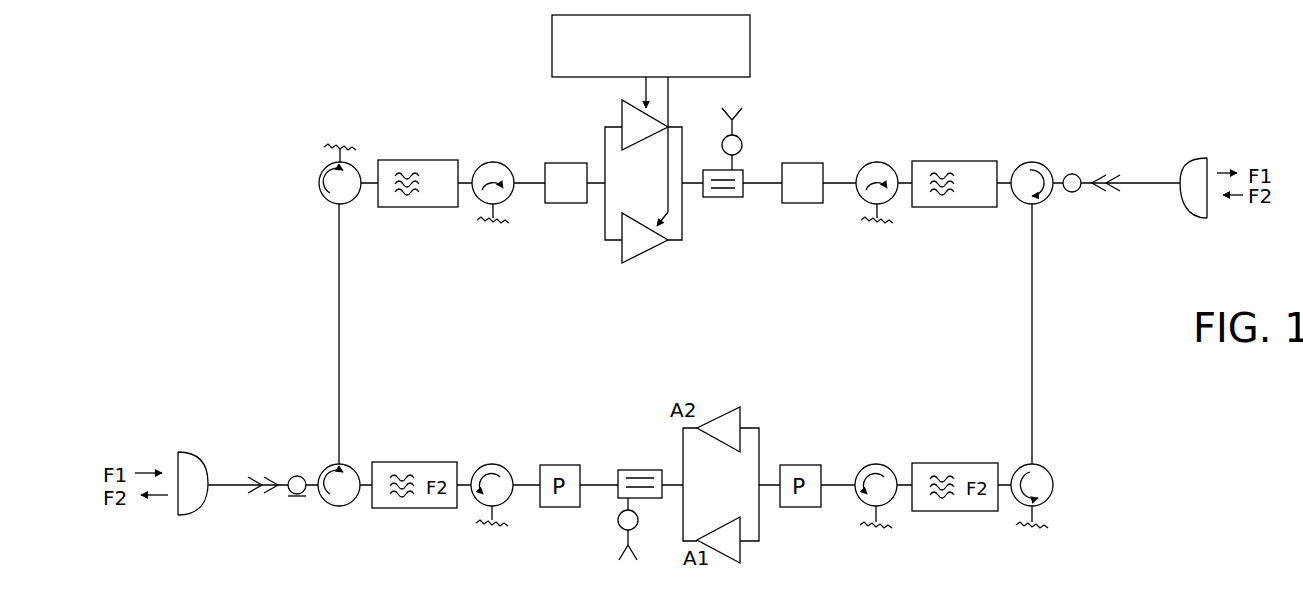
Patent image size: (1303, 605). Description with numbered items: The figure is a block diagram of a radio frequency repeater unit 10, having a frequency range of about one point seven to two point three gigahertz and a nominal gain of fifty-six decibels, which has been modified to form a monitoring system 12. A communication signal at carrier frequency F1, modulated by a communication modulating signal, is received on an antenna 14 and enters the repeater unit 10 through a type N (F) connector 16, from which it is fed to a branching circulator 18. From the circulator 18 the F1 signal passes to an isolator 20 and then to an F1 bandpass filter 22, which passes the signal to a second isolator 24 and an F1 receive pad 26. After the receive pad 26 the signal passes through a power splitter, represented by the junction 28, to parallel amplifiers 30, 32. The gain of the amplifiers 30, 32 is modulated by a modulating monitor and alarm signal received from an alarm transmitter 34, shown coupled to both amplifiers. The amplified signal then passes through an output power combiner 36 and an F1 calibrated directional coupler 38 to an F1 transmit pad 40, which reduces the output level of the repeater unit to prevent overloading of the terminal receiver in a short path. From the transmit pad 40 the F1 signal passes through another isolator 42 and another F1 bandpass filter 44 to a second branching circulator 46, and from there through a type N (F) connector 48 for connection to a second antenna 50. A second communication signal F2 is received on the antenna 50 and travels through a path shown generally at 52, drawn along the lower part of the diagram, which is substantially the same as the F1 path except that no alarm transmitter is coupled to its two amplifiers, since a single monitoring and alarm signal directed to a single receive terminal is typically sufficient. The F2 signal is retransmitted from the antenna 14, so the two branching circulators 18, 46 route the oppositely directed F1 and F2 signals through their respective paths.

The radio frequency repeater unit 10 is at (377, 95).
The monitoring system 12 is at (455, 48).
The antenna 14 is at (190, 515).
The type N (F) connector 16 is at (303, 476).
The branching circulator 18 is at (348, 505).
The isolator 20 is at (324, 196).
The F1 bandpass filter 22 is at (413, 207).
The second isolator 24 is at (493, 162).
The F1 receive pad 26 is at (563, 205).
The junction 28 is at (603, 180).
The amplifier 30 is at (633, 263).
The amplifier 32 is at (640, 142).
The alarm transmitter 34 is at (750, 44).
The output power combiner 36 is at (685, 187).
The F1 calibrated directional coupler 38 is at (747, 167).
The F1 transmit pad 40 is at (803, 205).
The isolator 42 is at (879, 162).
The F1 bandpass filter 44 is at (957, 160).
The second branching circulator 46 is at (1032, 162).
The type N (F) connector 48 is at (1075, 175).
The second antenna 50 is at (1190, 212).
The path 52 is at (838, 416).